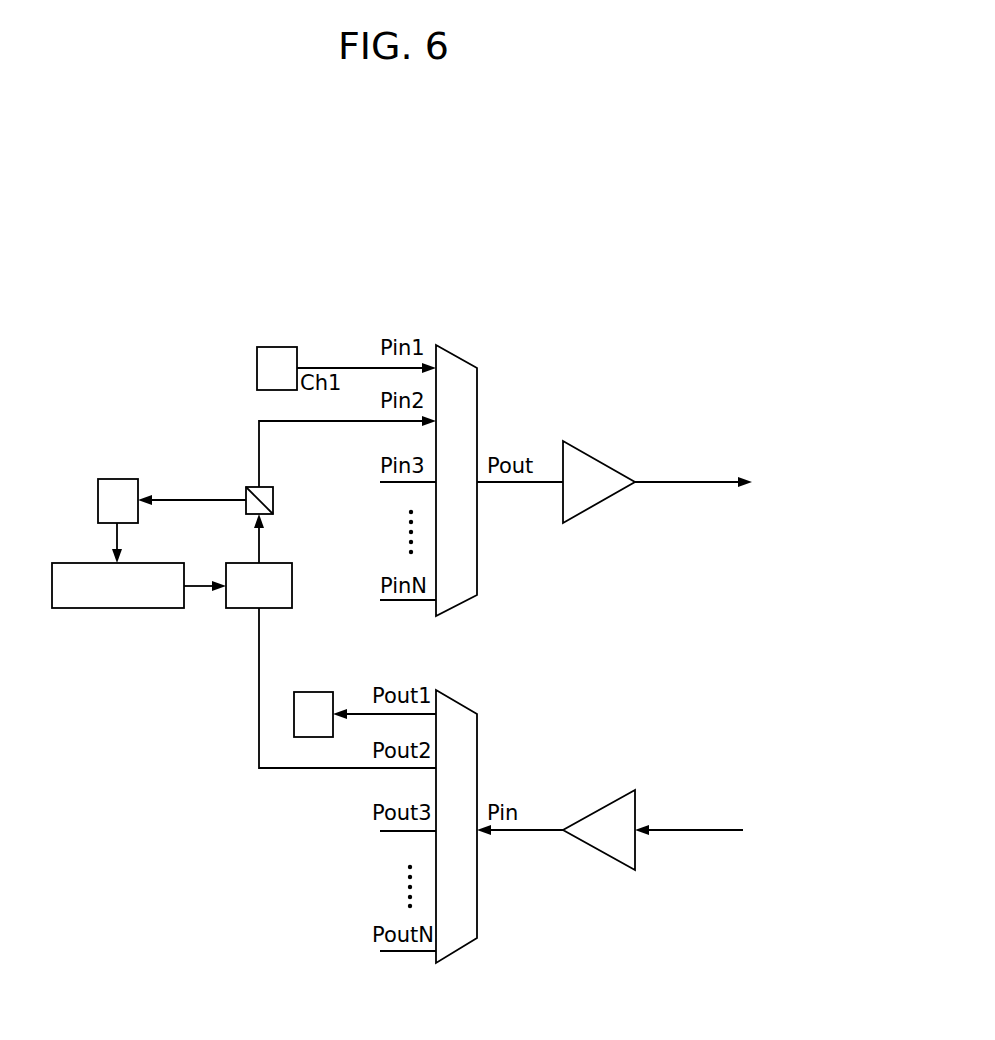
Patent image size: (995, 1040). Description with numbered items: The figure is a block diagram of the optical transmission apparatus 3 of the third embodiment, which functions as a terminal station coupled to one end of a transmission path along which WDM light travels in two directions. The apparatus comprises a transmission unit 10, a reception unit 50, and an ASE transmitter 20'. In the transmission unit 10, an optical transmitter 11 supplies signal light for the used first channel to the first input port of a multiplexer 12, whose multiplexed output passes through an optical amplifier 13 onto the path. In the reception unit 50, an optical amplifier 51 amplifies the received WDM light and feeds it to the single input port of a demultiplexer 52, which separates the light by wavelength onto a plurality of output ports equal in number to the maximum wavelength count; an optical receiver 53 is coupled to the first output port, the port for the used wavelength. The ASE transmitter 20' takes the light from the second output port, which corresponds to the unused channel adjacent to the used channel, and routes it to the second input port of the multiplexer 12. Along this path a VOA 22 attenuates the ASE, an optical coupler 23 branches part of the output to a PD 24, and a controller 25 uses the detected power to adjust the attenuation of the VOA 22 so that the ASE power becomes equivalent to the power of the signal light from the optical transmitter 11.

The optical transmission apparatus 3 is at (642, 244).
The transmission unit 10 is at (596, 591).
The optical transmitter 11 is at (277, 347).
The multiplexer 12 is at (459, 358).
The optical amplifier 13 is at (597, 460).
The ASE transmitter 20' is at (128, 734).
The VOA 22 is at (292, 578).
The optical coupler 23 is at (273, 488).
The PD 24 is at (113, 479).
The controller 25 is at (112, 608).
The reception unit 50 is at (594, 934).
The optical amplifier 51 is at (612, 803).
The demultiplexer 52 is at (460, 704).
The optical receiver 53 is at (313, 692).